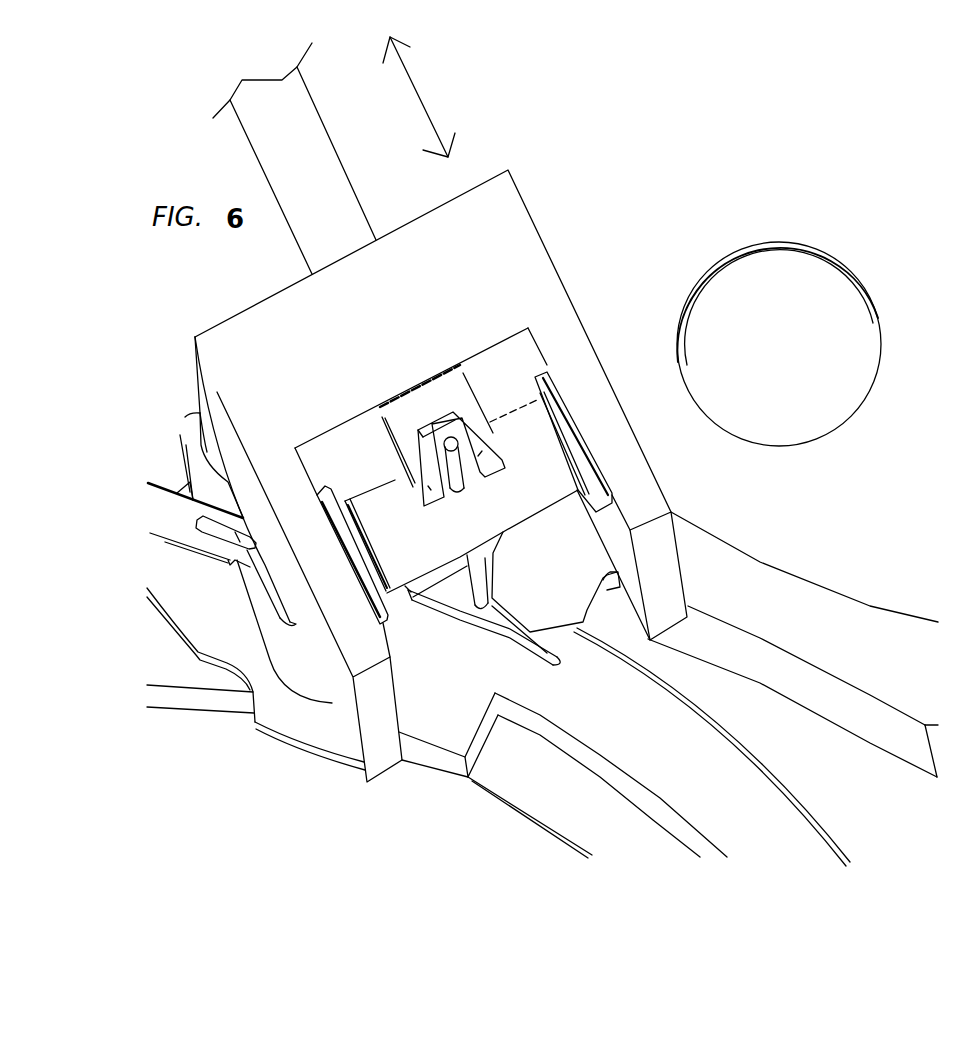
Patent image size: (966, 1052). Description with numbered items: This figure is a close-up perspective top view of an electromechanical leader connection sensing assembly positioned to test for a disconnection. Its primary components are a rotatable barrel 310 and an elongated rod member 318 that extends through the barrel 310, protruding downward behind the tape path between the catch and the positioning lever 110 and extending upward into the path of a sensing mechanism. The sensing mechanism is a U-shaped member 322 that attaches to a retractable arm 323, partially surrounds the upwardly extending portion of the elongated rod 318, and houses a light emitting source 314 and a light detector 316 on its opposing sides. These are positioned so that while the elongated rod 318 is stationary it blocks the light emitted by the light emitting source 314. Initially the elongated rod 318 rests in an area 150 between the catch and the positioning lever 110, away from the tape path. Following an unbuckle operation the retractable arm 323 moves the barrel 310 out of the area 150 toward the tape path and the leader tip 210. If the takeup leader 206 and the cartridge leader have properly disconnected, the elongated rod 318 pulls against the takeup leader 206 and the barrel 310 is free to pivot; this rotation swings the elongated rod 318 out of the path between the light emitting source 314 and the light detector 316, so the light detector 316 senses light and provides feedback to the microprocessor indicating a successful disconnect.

The positioning lever 110 is at (573, 564).
The area 150 is at (452, 598).
The takeup leader 206 is at (185, 530).
The leader tip 210 is at (535, 657).
The rotatable barrel 310 is at (420, 556).
The light emitting source 314 is at (482, 451).
The light detector 316 is at (428, 486).
The elongated rod member 318 is at (463, 487).
The U-shaped member 322 is at (440, 413).
The retractable arm 323 is at (527, 210).